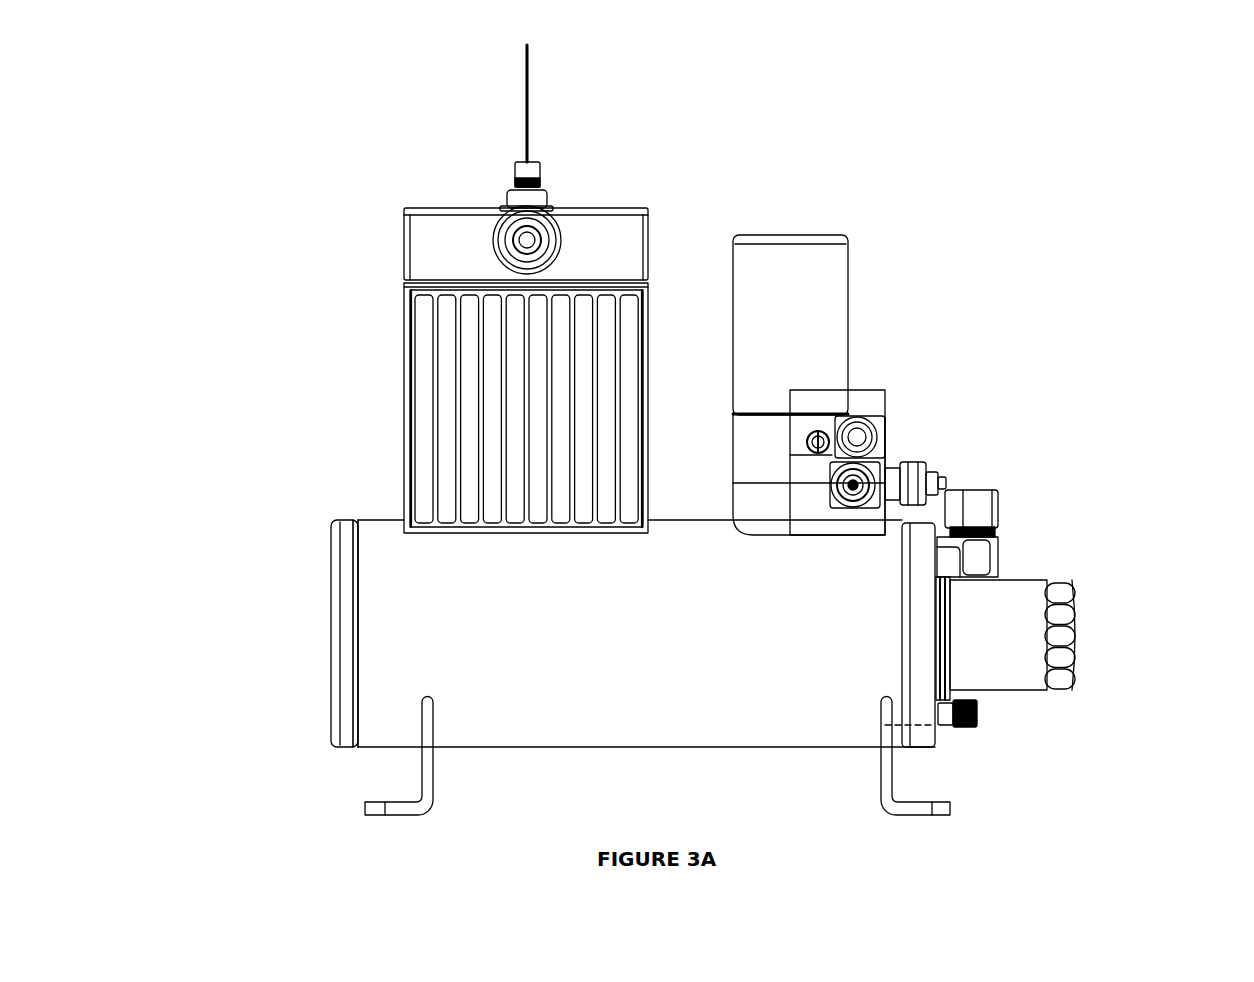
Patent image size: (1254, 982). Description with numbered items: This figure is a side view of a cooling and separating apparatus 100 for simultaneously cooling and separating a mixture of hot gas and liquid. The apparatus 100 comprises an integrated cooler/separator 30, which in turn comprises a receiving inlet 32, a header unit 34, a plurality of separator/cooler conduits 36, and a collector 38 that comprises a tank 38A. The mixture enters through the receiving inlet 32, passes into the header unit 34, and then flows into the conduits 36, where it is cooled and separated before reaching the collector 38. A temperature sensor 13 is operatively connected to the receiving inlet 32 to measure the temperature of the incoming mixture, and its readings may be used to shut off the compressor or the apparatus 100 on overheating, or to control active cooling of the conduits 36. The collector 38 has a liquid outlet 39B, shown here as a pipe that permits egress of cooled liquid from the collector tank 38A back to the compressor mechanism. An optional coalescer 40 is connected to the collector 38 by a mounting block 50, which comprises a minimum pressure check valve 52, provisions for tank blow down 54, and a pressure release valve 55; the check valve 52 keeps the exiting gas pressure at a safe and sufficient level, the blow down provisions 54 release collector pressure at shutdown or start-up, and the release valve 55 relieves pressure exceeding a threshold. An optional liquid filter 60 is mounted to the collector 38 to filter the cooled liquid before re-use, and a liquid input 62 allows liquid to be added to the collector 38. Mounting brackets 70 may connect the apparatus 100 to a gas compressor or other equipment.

The cooling and separating apparatus 100 is at (880, 182).
The integrated cooler/separator 30 is at (264, 536).
The temperature sensor 13 is at (505, 195).
The receiving inlet 32 is at (540, 235).
The header unit 34 is at (460, 245).
The separator/cooler conduits 36 is at (425, 427).
The collector 38 is at (490, 653).
The tank 38A is at (630, 633).
The coalescer 40 is at (808, 312).
The mounting block 50 is at (808, 508).
The minimum pressure check valve 52 is at (946, 474).
The provisions for tank blow down 54 is at (866, 430).
The pressure release valve 55 is at (822, 438).
The liquid filter 60 is at (1000, 630).
The liquid input 62 is at (996, 520).
The mounting brackets 70 is at (365, 818).
The liquid outlet 39B is at (977, 726).